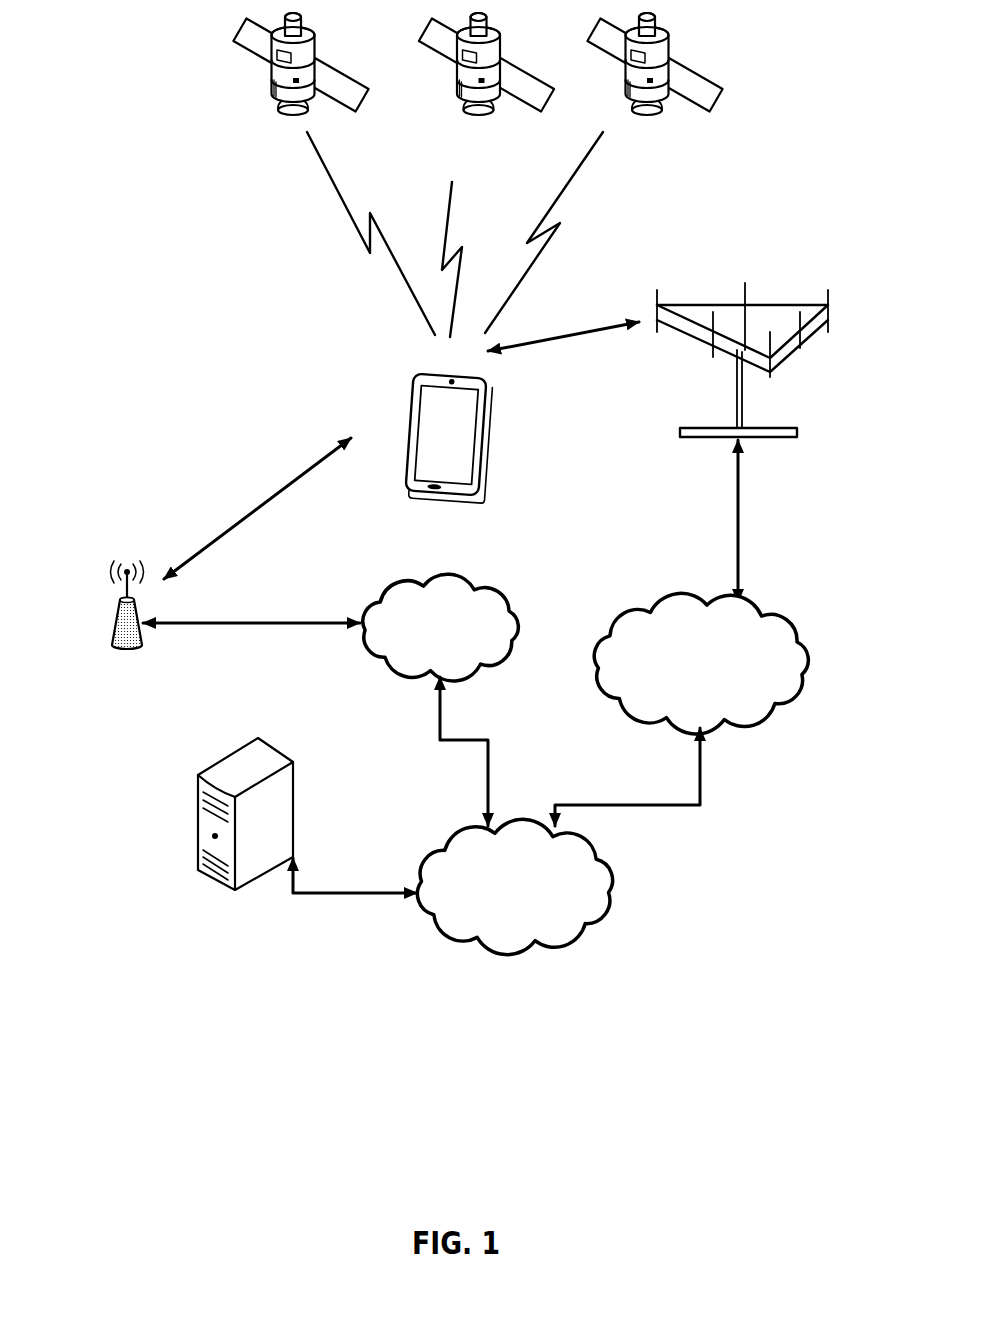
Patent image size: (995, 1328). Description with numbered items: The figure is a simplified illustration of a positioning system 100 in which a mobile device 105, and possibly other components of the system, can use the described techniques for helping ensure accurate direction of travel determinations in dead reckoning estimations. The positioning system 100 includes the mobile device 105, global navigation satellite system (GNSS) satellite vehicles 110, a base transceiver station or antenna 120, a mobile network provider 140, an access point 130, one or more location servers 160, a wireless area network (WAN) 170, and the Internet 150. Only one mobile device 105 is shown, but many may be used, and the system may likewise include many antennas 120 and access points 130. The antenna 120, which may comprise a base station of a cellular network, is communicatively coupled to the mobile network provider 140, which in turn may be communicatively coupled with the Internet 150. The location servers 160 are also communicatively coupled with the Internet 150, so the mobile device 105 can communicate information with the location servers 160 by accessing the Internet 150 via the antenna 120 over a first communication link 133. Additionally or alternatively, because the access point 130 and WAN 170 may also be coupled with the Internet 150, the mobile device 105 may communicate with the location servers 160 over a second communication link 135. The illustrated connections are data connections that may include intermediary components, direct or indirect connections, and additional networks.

The positioning system 100 is at (143, 1081).
The mobile device 105 is at (417, 376).
The GNSS satellite vehicles 110 is at (212, 75).
The base transceiver station 120 is at (772, 438).
The access point 130 is at (135, 648).
The first communication link 133 is at (554, 341).
The second communication link 135 is at (262, 508).
The mobile network provider 140 is at (784, 628).
The Internet 150 is at (613, 893).
The location server 160 is at (268, 753).
The wireless area network 170 is at (504, 660).